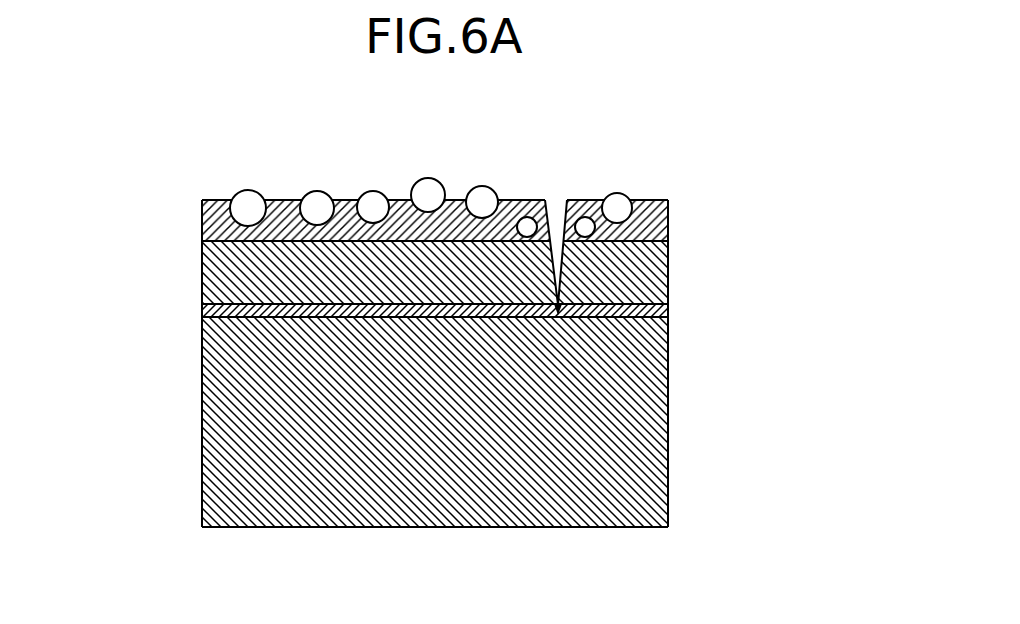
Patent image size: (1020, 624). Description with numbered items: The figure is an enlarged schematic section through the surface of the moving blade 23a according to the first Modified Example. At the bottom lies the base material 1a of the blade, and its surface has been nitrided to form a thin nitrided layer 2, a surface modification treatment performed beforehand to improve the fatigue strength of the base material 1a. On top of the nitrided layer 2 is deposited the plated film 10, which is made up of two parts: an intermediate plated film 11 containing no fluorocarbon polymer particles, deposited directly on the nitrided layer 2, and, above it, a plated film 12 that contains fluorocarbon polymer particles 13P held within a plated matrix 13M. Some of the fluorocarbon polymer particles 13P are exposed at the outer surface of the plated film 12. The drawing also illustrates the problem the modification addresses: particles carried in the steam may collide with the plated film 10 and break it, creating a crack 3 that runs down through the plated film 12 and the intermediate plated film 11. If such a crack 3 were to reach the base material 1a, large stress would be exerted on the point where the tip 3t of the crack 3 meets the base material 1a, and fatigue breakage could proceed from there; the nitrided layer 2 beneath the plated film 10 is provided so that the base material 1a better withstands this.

The moving blade 23a is at (195, 163).
The plated film 10 is at (195, 202).
The intermediate plated film 11 is at (677, 241).
The plated film containing fluorocarbon polymer particles 12 is at (677, 200).
The fluorocarbon polymer particles 13P is at (480, 198).
The plated matrix 13M is at (652, 202).
The crack 3 is at (557, 215).
The tip of the crack 3t is at (588, 340).
The nitrided layer 2 is at (668, 308).
The base material 1a is at (512, 520).